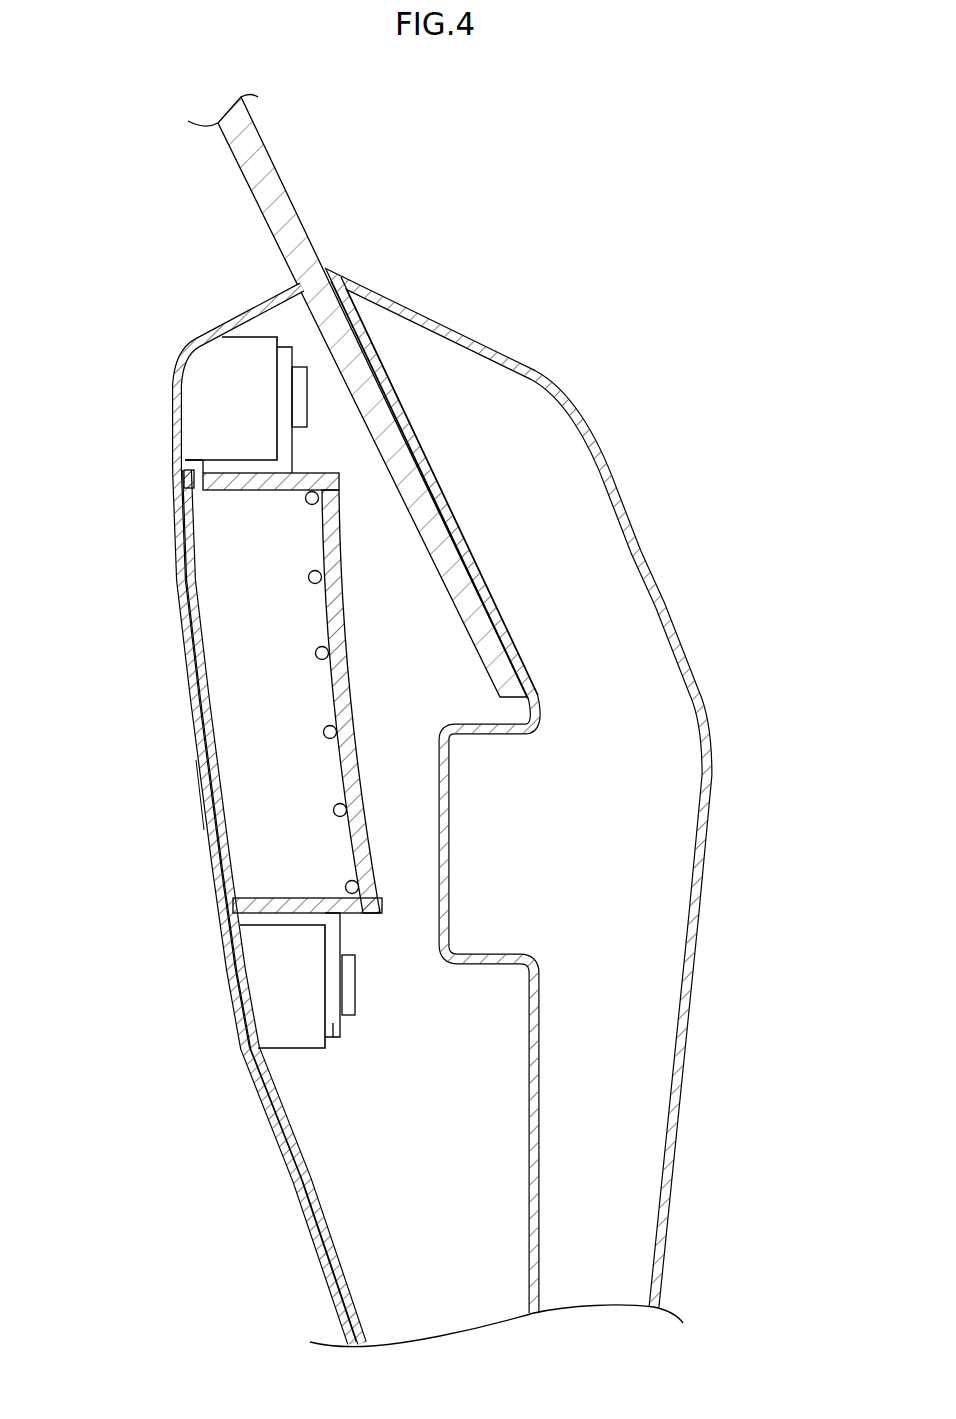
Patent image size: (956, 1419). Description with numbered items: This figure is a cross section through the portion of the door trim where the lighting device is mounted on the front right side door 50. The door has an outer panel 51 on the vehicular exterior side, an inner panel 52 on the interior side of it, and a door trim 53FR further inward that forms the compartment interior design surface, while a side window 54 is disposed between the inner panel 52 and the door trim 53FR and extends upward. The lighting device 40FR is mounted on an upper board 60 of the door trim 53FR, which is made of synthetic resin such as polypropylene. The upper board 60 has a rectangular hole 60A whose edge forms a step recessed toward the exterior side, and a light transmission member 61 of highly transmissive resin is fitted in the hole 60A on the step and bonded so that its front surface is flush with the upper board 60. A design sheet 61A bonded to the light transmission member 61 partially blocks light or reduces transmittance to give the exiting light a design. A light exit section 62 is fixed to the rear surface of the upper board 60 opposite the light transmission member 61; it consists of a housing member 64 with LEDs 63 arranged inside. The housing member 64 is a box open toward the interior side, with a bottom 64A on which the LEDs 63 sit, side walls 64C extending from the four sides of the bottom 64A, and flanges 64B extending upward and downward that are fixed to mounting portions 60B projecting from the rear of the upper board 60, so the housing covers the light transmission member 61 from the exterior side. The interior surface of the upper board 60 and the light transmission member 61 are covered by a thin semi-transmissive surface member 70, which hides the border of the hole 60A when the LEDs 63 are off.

The side door 50 is at (578, 122).
The outer panel 51 is at (520, 366).
The inner panel 52 is at (458, 535).
The door trim 53FR is at (290, 1255).
The side window 54 is at (247, 145).
The lighting device 40FR is at (330, 445).
The upper board 60 is at (333, 1257).
The hole 60A is at (177, 493).
The mounting portions 60B is at (218, 367).
The light transmission member 61 is at (203, 750).
The design sheet 61A is at (212, 772).
The light exit section 62 is at (78, 572).
The LEDs 63 is at (307, 578).
The housing member 64 is at (323, 690).
The bottom 64A is at (340, 605).
The flanges 64B is at (280, 347).
The side walls 64C is at (357, 917).
The surface member 70 is at (172, 423).